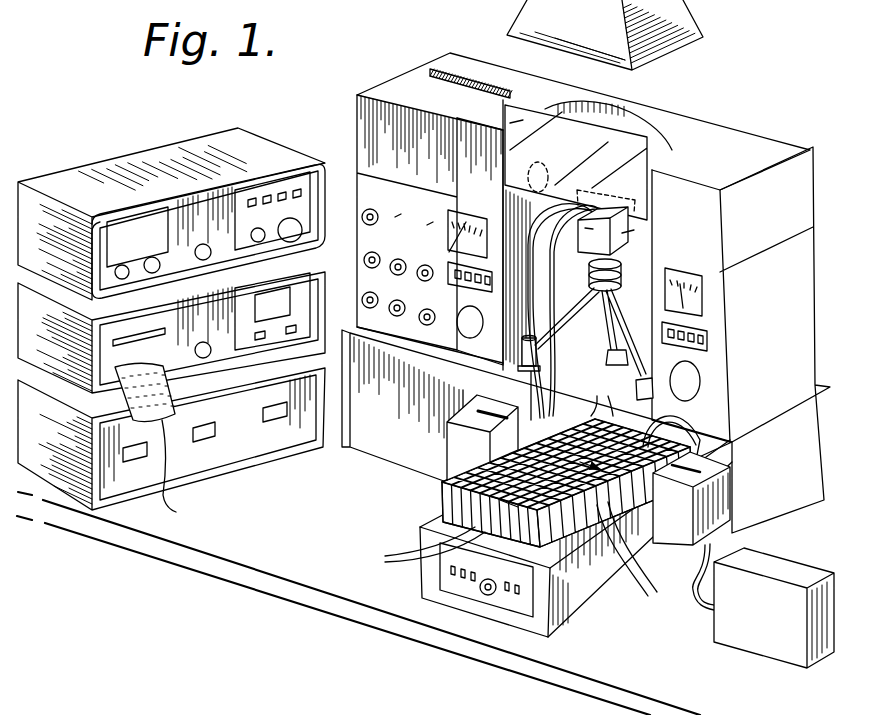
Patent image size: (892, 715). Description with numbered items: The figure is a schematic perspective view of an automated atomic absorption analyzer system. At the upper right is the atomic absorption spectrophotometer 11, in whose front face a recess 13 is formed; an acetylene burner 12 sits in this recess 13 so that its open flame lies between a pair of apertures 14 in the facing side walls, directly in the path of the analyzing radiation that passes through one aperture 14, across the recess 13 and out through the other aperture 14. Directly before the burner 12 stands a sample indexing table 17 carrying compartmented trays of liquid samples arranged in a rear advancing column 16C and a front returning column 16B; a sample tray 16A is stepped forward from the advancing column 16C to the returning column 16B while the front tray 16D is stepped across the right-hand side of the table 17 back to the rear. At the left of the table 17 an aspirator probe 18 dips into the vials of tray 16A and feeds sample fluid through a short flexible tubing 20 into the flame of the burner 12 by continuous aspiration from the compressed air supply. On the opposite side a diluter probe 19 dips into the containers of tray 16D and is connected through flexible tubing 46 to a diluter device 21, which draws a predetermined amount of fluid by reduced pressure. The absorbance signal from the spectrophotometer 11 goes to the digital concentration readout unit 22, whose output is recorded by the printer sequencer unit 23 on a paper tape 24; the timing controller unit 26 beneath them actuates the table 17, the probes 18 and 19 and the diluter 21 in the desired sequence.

The atomic absorption spectrophotometer 11 is at (724, 117).
The acetylene burner 12 is at (630, 250).
The recess 13 is at (545, 204).
The apertures 14 is at (503, 167).
The sample tray 16A is at (470, 462).
The returning column of trays 16B is at (416, 547).
The advancing column of trays 16C is at (600, 395).
The front tray 16D is at (642, 560).
The sample indexing table 17 is at (592, 623).
The aspirator probe 18 is at (440, 444).
The diluter probe 19 is at (720, 509).
The flexible tubing 20 is at (552, 368).
The diluter device 21 is at (750, 656).
The digital concentration readout unit 22 is at (263, 124).
The printer sequencer unit 23 is at (334, 275).
The tape 24 is at (158, 445).
The timing controller unit 26 is at (250, 470).
The flexible tubing 46 is at (677, 413).